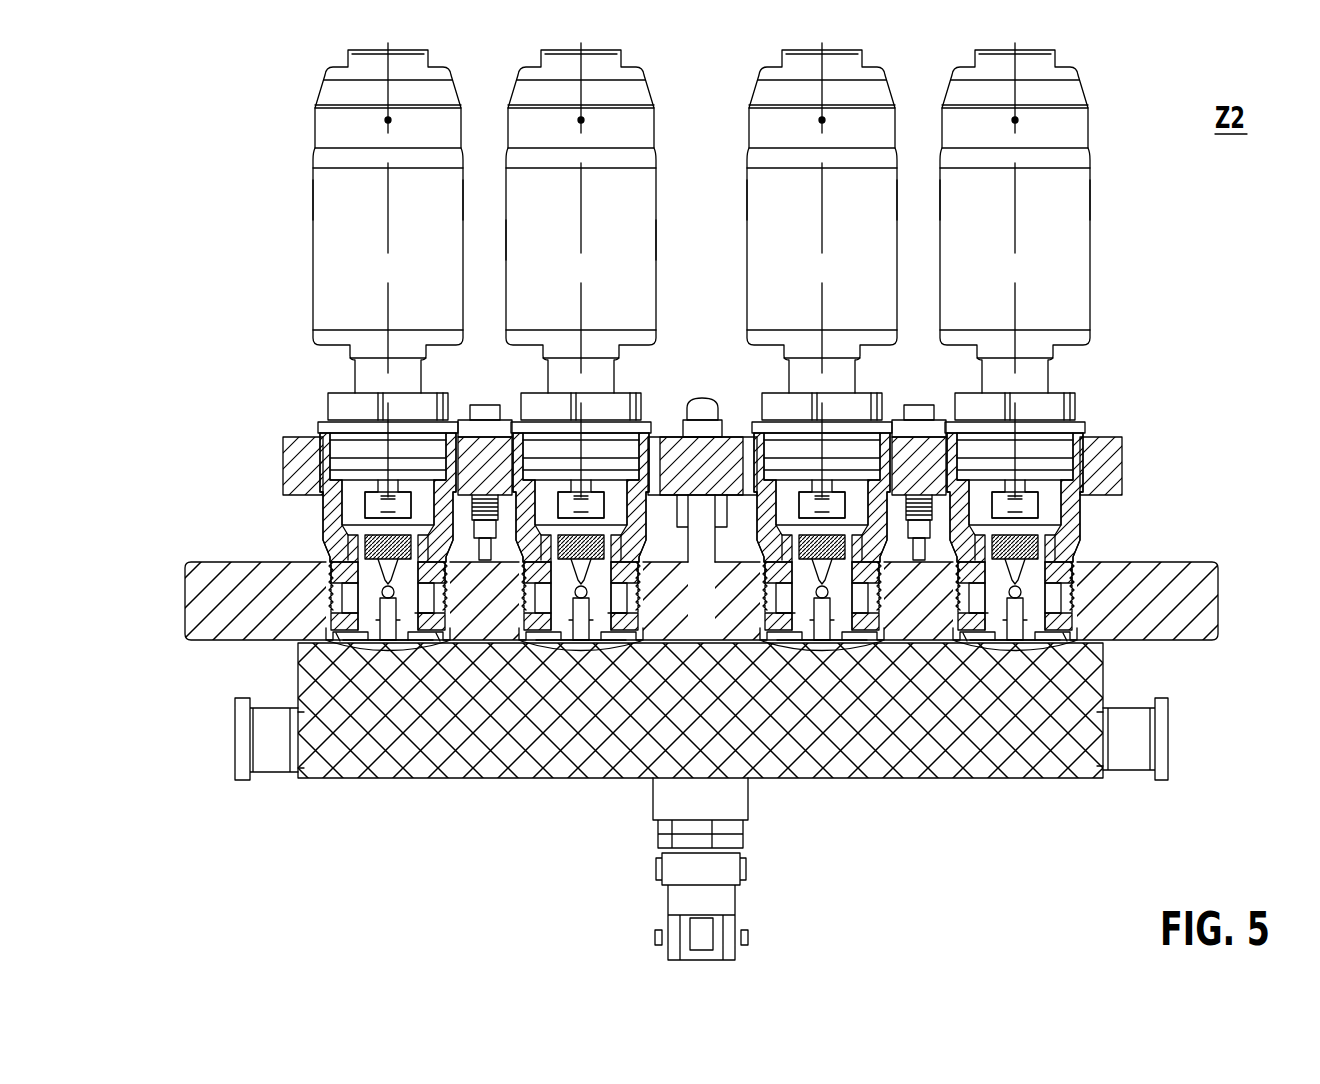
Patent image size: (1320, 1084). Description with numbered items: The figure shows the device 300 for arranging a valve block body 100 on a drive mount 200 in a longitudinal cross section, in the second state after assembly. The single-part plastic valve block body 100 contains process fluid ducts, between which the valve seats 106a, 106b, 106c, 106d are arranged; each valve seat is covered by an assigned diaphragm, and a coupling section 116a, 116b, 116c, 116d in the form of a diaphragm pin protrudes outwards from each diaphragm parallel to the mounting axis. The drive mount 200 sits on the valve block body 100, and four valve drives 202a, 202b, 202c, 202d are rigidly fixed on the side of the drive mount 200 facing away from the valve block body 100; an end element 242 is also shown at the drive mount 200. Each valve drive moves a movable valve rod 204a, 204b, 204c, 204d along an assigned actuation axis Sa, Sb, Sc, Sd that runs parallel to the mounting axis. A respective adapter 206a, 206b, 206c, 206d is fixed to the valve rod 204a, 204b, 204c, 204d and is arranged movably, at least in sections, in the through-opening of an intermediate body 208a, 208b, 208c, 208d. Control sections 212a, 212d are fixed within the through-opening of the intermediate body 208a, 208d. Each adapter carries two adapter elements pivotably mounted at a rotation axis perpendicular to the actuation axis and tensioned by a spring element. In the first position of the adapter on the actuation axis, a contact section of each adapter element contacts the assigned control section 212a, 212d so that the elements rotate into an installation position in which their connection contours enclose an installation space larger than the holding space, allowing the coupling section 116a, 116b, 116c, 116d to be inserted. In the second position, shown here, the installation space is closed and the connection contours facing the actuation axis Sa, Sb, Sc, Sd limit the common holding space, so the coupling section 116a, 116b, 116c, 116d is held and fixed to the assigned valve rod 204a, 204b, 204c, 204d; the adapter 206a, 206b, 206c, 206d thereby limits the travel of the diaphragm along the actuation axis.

The device 300 is at (170, 180).
The drive mount 200 is at (1175, 597).
The valve block body 100 is at (455, 760).
The end clamp block 242 is at (1110, 460).
The valve drive 202a is at (1050, 263).
The valve drive 202b is at (846, 92).
The valve drive 202c is at (619, 92).
The valve drive 202d is at (413, 92).
The valve rod 204a is at (1014, 508).
The valve rod 204b is at (822, 508).
The valve rod 204c is at (580, 508).
The valve rod 204d is at (387, 508).
The adapter 206a is at (1040, 648).
The adapter 206b is at (845, 648).
The adapter 206c is at (558, 648).
The adapter 206d is at (365, 648).
The intermediate body 208a is at (1068, 531).
The intermediate body 208b is at (745, 552).
The intermediate body 208c is at (668, 552).
The intermediate body 208d is at (337, 533).
The control section 212a is at (978, 556).
The control section 212d is at (347, 553).
The valve seat 106a is at (1018, 665).
The valve seat 106b is at (826, 665).
The valve seat 106c is at (578, 665).
The valve seat 106d is at (385, 665).
The coupling section 116a is at (995, 650).
The coupling section 116b is at (800, 650).
The coupling section 116c is at (604, 650).
The coupling section 116d is at (410, 650).
The actuation axis Sa is at (1015, 202).
The actuation axis Sb is at (822, 198).
The actuation axis Sc is at (582, 237).
The actuation axis Sd is at (388, 204).